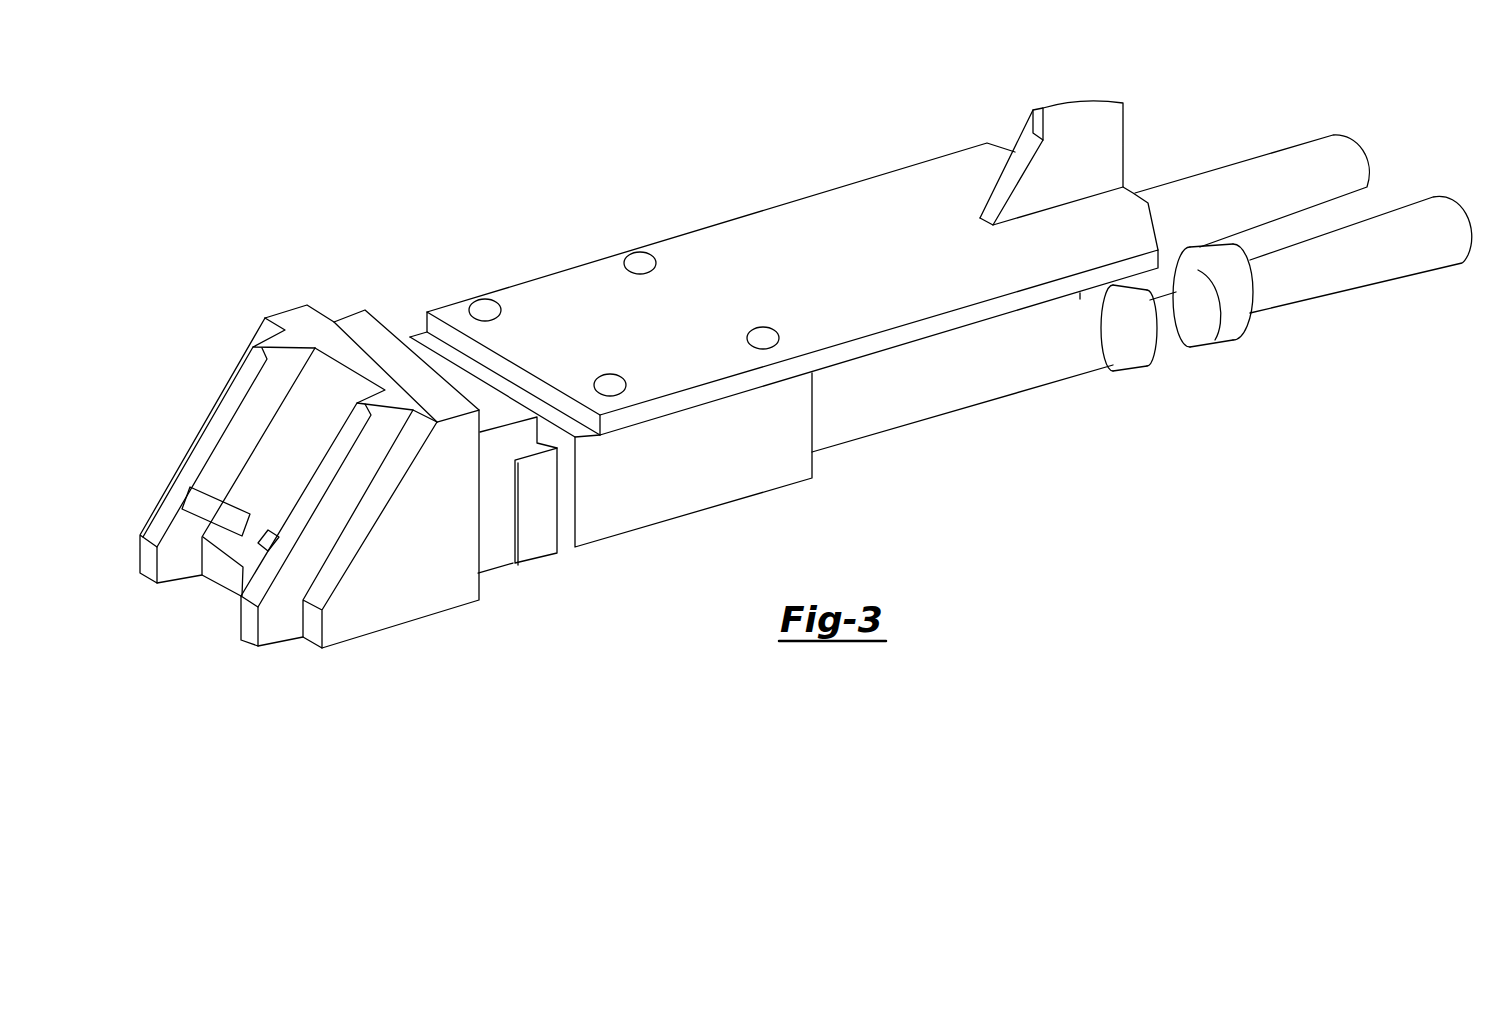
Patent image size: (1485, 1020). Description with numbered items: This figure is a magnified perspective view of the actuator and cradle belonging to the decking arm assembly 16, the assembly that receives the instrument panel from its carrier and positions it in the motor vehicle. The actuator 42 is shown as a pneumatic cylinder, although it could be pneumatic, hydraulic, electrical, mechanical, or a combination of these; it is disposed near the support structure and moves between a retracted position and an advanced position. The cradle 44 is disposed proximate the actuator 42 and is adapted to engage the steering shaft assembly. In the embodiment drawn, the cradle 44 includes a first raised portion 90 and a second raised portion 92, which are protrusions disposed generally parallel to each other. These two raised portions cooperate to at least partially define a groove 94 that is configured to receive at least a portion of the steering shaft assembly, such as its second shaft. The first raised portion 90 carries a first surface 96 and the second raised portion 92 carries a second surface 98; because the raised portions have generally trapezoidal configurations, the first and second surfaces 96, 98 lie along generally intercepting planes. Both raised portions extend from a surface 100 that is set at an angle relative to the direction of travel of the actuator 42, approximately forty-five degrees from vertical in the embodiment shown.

The decking arm assembly 16 is at (739, 131).
The actuator 42 is at (851, 477).
The cradle 44 is at (294, 465).
The first raised portion 90 is at (154, 571).
The second raised portion 92 is at (248, 629).
The groove 94 is at (224, 576).
The first surface 96 is at (283, 368).
The second surface 98 is at (355, 403).
The surface 100 is at (363, 522).